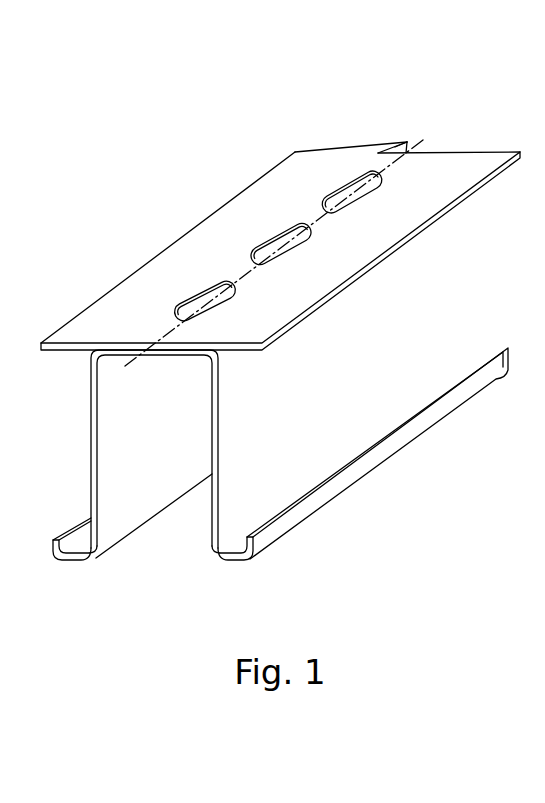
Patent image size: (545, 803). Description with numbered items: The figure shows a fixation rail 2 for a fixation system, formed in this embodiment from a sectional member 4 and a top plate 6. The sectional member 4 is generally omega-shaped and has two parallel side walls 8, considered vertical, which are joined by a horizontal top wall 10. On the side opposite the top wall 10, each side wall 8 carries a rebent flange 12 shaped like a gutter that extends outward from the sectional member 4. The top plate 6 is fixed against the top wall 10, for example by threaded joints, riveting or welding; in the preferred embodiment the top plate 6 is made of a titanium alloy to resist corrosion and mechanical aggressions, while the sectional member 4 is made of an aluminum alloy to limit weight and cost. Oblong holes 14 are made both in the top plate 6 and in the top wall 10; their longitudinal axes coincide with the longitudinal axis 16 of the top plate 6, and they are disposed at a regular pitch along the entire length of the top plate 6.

The rail 2 is at (153, 162).
The sectional member 4 is at (440, 218).
The top plate 6 is at (479, 160).
The side walls 8 is at (91, 433).
The top wall 10 is at (175, 356).
The rebent flange 12 is at (76, 561).
The oblong holes 14 is at (347, 188).
The longitudinal axis 16 is at (423, 141).